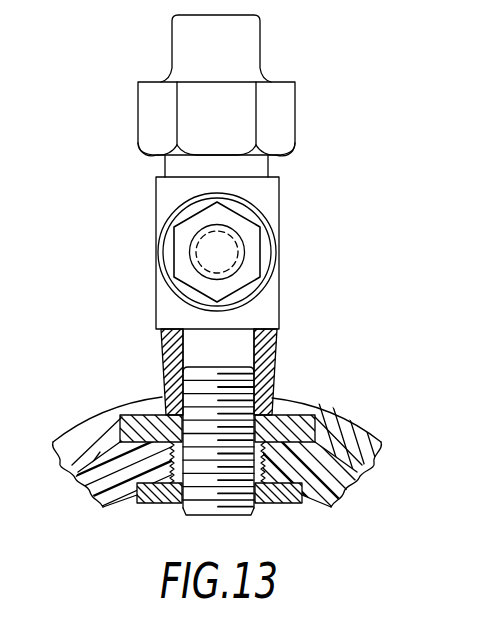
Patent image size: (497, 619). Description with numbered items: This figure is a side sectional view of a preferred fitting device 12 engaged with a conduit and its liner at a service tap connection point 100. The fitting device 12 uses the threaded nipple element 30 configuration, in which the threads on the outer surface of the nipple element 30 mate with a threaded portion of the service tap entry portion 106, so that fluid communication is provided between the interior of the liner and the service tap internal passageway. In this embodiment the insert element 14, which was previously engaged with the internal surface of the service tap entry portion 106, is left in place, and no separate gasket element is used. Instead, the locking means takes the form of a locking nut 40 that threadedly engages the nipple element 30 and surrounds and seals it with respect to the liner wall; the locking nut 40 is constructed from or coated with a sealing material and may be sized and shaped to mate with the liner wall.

The service tap connection point 100 is at (120, 265).
The service tap entry portion 106 is at (163, 355).
The insert element 14 is at (289, 417).
The nipple element 30 is at (238, 507).
The locking nut 40 is at (153, 503).
The fitting device 12 is at (322, 525).